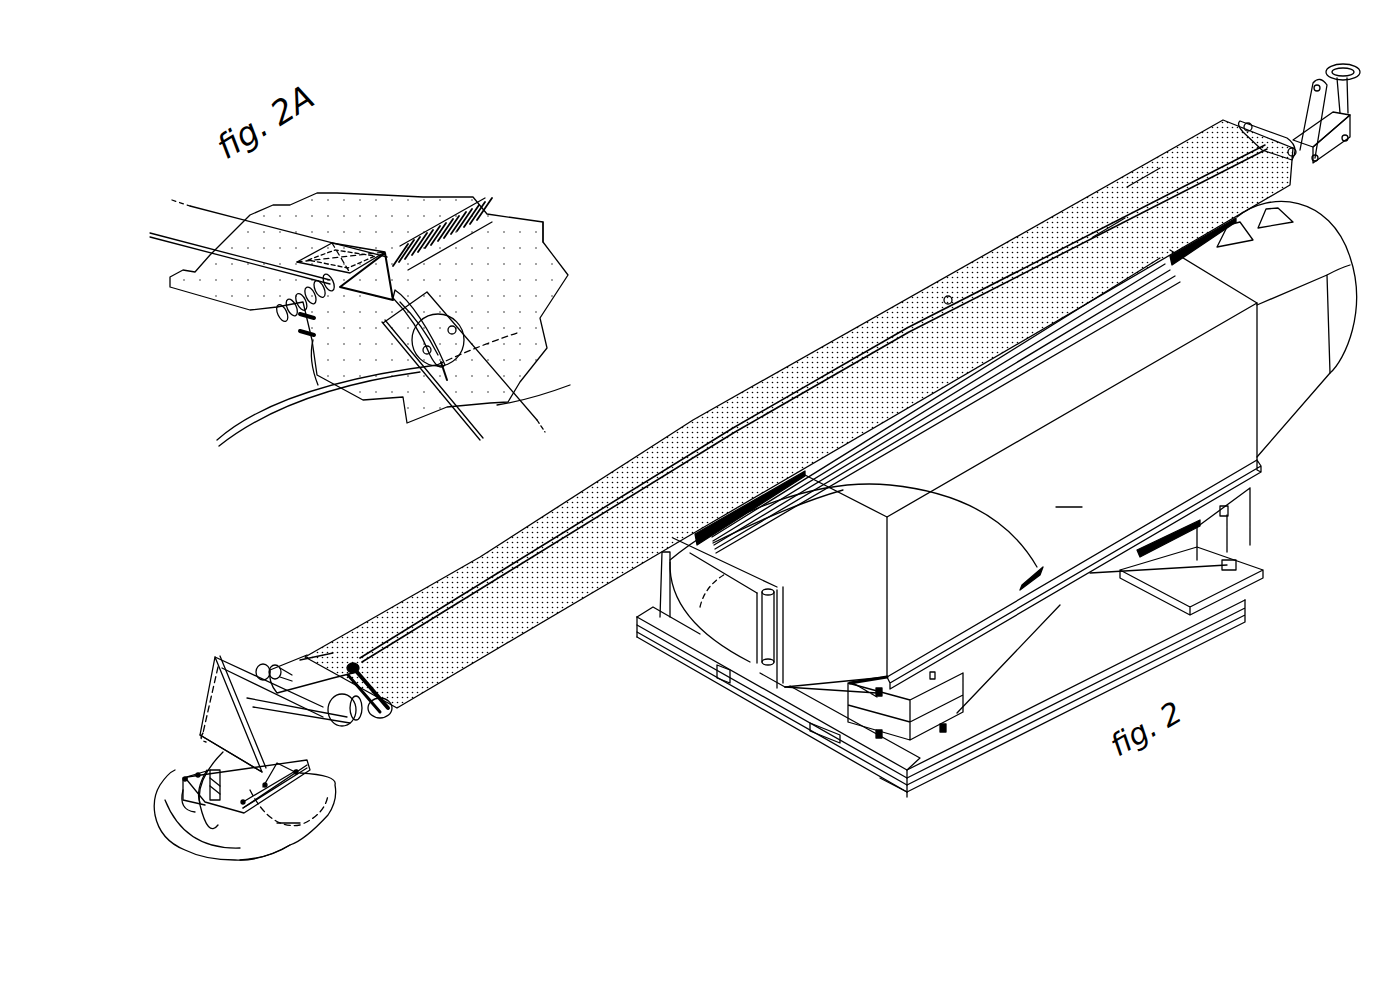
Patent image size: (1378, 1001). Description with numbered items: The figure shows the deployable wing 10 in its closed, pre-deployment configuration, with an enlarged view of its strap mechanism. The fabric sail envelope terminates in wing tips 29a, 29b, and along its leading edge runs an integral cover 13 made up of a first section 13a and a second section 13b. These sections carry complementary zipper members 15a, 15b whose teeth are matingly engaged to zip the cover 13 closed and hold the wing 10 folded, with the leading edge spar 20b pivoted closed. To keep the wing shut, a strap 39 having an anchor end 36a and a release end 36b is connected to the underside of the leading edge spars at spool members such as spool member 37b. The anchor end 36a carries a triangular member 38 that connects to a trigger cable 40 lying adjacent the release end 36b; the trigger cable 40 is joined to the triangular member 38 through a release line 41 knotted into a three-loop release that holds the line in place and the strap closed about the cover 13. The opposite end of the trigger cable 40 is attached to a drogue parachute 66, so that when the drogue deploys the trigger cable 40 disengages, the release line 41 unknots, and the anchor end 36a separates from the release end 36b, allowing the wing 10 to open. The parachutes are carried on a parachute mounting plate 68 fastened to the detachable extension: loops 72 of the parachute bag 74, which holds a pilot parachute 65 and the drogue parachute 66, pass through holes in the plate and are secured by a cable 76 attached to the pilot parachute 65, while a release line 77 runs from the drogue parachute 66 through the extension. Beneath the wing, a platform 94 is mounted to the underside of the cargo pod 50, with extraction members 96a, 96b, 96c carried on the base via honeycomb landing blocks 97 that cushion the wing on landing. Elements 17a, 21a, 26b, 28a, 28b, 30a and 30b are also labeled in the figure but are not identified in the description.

In FIG. 2, the deployable wing 10 is at (982, 158).
In FIG. 2, the integral cover 13 is at (1190, 197).
In FIG. 2, the first section 13a is at (1127, 187).
In FIG. 2A, the first section 13a is at (330, 203).
In FIG. 2, the second section 13b is at (1093, 237).
In FIG. 2A, the second section 13b is at (518, 238).
In FIG. 2, the zipper member 15a is at (1030, 257).
In FIG. 2A, the zipper member 15a is at (278, 310).
In FIG. 2, the zipper member 15b is at (952, 302).
In FIG. 2A, the zipper member 15b is at (307, 337).
In FIG. 2, the hinge plate 17a is at (1260, 122).
In FIG. 2, the clamp lever 26b is at (1295, 127).
In FIG. 2, the leading edge spar 20b is at (1323, 180).
In FIG. 2, the cargo pod 50 is at (958, 469).
In FIG. 2, the landing blocks 97 is at (1237, 522).
In FIG. 2, the strap 39 is at (356, 648).
In FIG. 2A, the strap 39 is at (397, 203).
In FIG. 2, the channel member 21a is at (293, 683).
In FIG. 2, the wing tip 29a is at (218, 678).
In FIG. 2, the wing tip 29b is at (355, 735).
In FIG. 2, the roller 30a is at (260, 667).
In FIG. 2, the roller 30b is at (355, 722).
In FIG. 2, the plate edge 28a is at (217, 683).
In FIG. 2, the plate edge 28b is at (230, 710).
In FIG. 2, the spool member 37b is at (390, 707).
In FIG. 2, the trigger cable 40 is at (200, 760).
In FIG. 2A, the trigger cable 40 is at (240, 417).
In FIG. 2, the loop 72 is at (269, 771).
In FIG. 2, the parachute mounting plate 68 is at (303, 763).
In FIG. 2, the parachute bag 74 is at (248, 792).
In FIG. 2, the cable 76 is at (183, 793).
In FIG. 2, the release line 77 is at (180, 777).
In FIG. 2, the pilot parachute 65 is at (183, 827).
In FIG. 2, the drogue parachute 66 is at (270, 838).
In FIG. 2, the platform 94 is at (740, 750).
In FIG. 2, the extraction member 96a is at (750, 685).
In FIG. 2, the extraction member 96b is at (838, 742).
In FIG. 2, the extraction member 96c is at (897, 787).
In FIG. 2A, the anchor end 36a is at (220, 227).
In FIG. 2A, the release end 36b is at (490, 393).
In FIG. 2A, the triangular member 38 is at (408, 273).
In FIG. 2A, the release line 41 is at (463, 330).